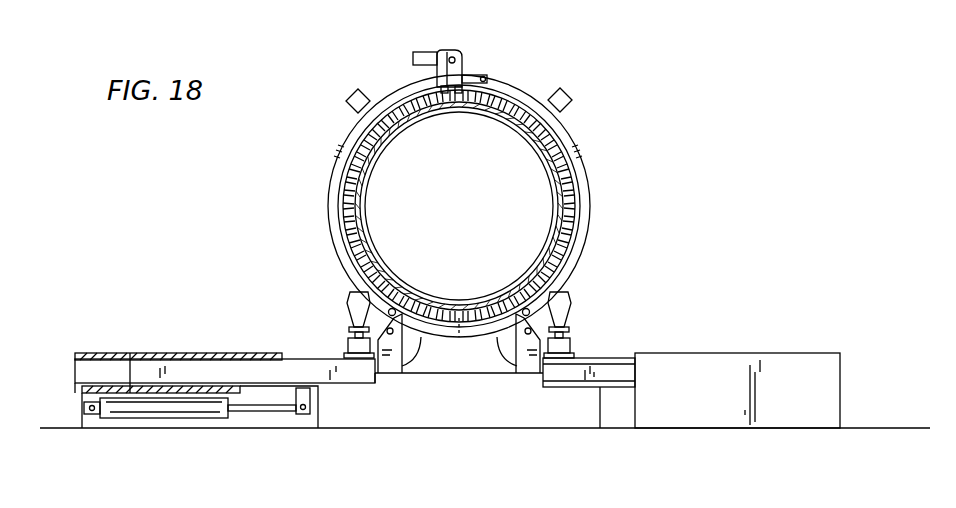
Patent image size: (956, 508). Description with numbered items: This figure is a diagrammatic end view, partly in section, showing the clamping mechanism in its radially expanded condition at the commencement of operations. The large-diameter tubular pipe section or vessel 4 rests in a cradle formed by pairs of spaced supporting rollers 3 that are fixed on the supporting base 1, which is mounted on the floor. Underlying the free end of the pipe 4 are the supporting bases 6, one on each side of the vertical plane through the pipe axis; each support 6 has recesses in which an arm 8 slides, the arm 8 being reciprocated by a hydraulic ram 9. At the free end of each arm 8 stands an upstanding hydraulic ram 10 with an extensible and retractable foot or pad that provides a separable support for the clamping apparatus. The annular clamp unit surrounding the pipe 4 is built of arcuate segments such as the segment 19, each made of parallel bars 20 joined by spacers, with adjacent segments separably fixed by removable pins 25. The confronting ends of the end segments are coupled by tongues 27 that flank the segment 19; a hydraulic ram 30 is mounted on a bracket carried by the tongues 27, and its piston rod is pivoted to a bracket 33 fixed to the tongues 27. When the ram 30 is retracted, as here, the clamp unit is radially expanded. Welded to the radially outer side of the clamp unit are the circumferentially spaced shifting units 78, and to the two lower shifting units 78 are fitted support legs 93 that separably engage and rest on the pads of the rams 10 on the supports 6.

The fixed supporting base 1 is at (468, 417).
The supporting rollers 3 is at (422, 352).
The tubular pipe section or vessel 4 is at (379, 146).
The supporting bases 6 is at (318, 414).
The arm 8 is at (214, 370).
The hydraulic ram 9 is at (172, 412).
The upstanding hydraulic ram 10 is at (348, 345).
The arcuate segment 19 is at (332, 212).
The parallel bar 20 is at (590, 250).
The removable pins 25 is at (461, 302).
The tongues 27 is at (478, 80).
The hydraulic ram 30 is at (426, 52).
The bracket 33 is at (455, 70).
The shifting means 78 is at (584, 94).
The support legs 93 is at (352, 300).